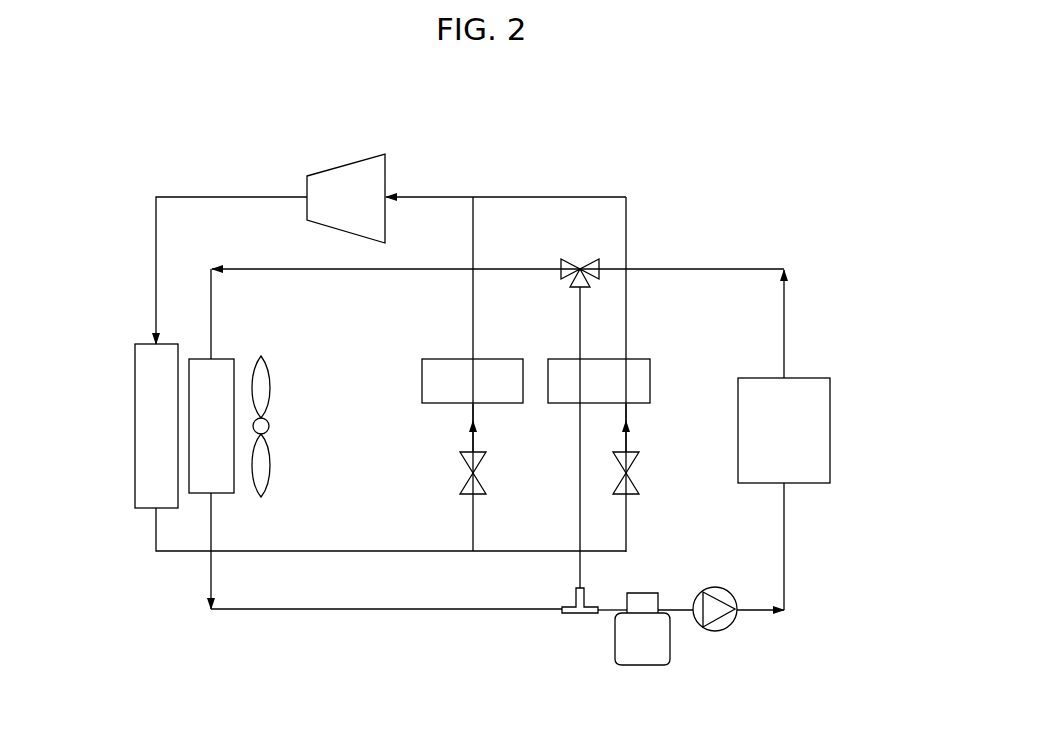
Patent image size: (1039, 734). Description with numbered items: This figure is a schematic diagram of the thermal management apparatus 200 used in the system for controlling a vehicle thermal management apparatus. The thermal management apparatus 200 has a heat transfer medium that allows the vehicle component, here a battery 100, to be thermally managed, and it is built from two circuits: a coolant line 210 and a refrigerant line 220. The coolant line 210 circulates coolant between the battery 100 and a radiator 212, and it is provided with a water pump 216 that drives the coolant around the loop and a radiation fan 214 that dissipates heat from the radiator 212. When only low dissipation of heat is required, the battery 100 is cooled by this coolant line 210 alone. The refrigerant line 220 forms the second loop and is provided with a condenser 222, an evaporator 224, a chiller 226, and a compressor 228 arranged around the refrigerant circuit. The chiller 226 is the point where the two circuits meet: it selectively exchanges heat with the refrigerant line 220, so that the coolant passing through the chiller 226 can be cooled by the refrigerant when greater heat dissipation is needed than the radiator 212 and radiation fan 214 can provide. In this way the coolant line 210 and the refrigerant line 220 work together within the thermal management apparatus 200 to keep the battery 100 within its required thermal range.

The battery 100 is at (806, 436).
The thermal management apparatus 200 is at (549, 165).
The coolant line 210 is at (714, 269).
The radiator 212 is at (197, 397).
The radiation fan 214 is at (263, 468).
The water pump 216 is at (722, 629).
The refrigerant line 220 is at (207, 197).
The condenser 222 is at (157, 465).
The evaporator 224 is at (432, 381).
The chiller 226 is at (638, 366).
The compressor 228 is at (345, 173).